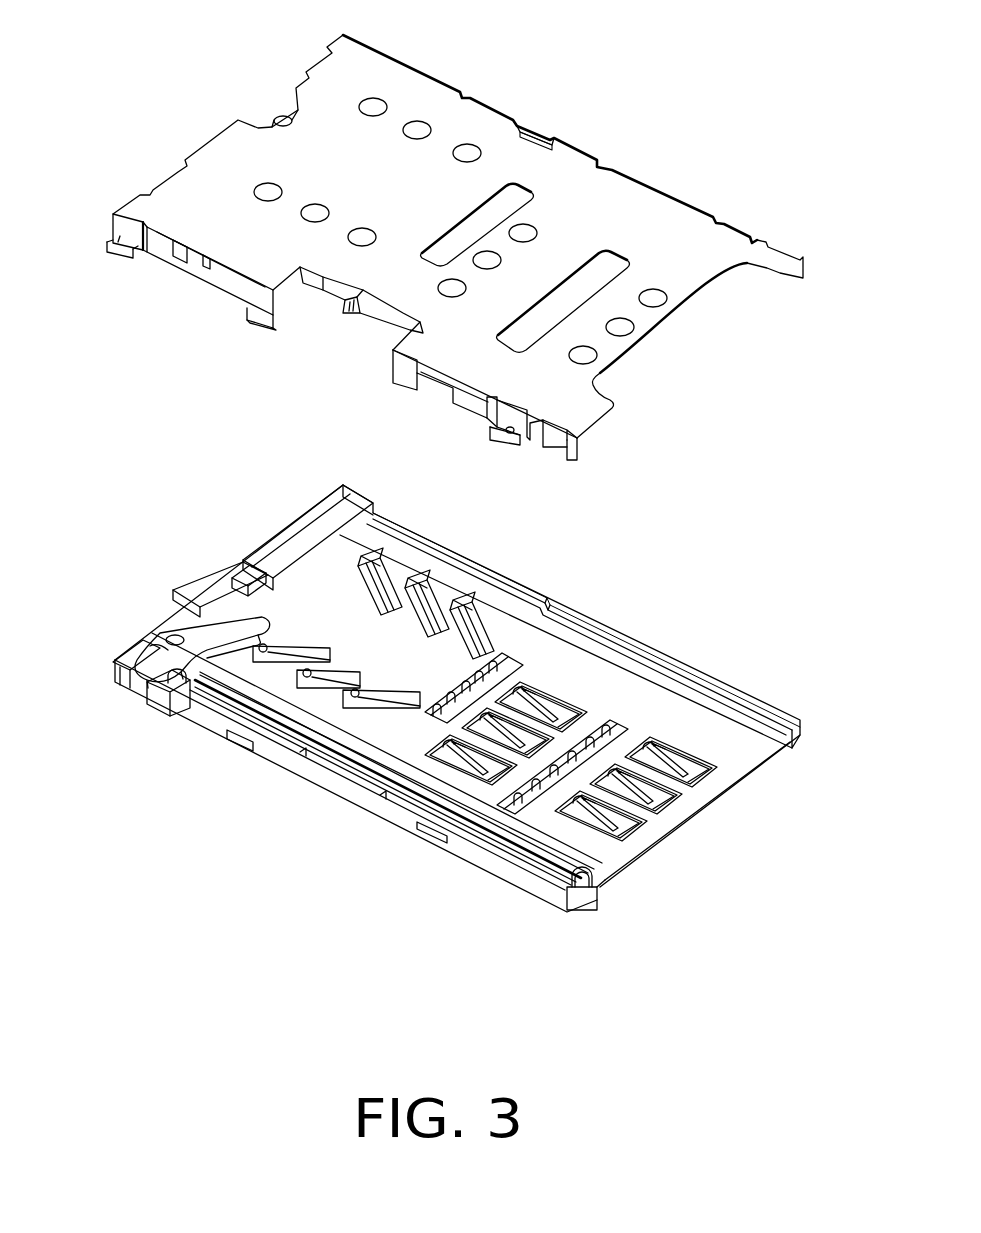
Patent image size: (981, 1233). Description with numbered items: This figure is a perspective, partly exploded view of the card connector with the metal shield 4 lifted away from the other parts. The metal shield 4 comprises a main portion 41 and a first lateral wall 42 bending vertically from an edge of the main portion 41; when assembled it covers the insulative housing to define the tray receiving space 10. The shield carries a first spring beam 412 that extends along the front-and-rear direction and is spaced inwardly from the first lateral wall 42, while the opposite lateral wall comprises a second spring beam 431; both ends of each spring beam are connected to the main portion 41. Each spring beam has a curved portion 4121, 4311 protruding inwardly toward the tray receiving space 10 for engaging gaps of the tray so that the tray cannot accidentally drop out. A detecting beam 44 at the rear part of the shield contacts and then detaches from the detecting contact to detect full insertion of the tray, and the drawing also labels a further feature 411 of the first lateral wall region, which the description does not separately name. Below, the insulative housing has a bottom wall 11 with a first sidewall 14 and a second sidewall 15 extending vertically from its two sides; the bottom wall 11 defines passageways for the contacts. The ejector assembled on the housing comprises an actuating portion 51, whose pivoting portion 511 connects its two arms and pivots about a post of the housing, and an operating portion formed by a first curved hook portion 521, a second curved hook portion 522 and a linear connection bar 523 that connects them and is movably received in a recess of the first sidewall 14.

The metal shield 4 is at (447, 56).
The main portion 41 is at (230, 163).
The first lateral wall 42 is at (157, 247).
The detecting beam 44 is at (282, 118).
The soldering leg 411 is at (283, 298).
The first spring beam 412 is at (325, 298).
The curved portion 4121 is at (375, 308).
The second spring beam 431 is at (533, 127).
The curved portion 4311 is at (553, 142).
The tray receiving space 10 is at (590, 672).
The bottom wall 11 is at (710, 727).
The first sidewall 14 is at (330, 783).
The second sidewall 15 is at (503, 577).
The actuating portion 51 is at (218, 633).
The pivoting portion 511 is at (163, 633).
The first curved hook portion 521 is at (583, 897).
The second curved hook portion 522 is at (160, 687).
The linear connection bar 523 is at (400, 795).